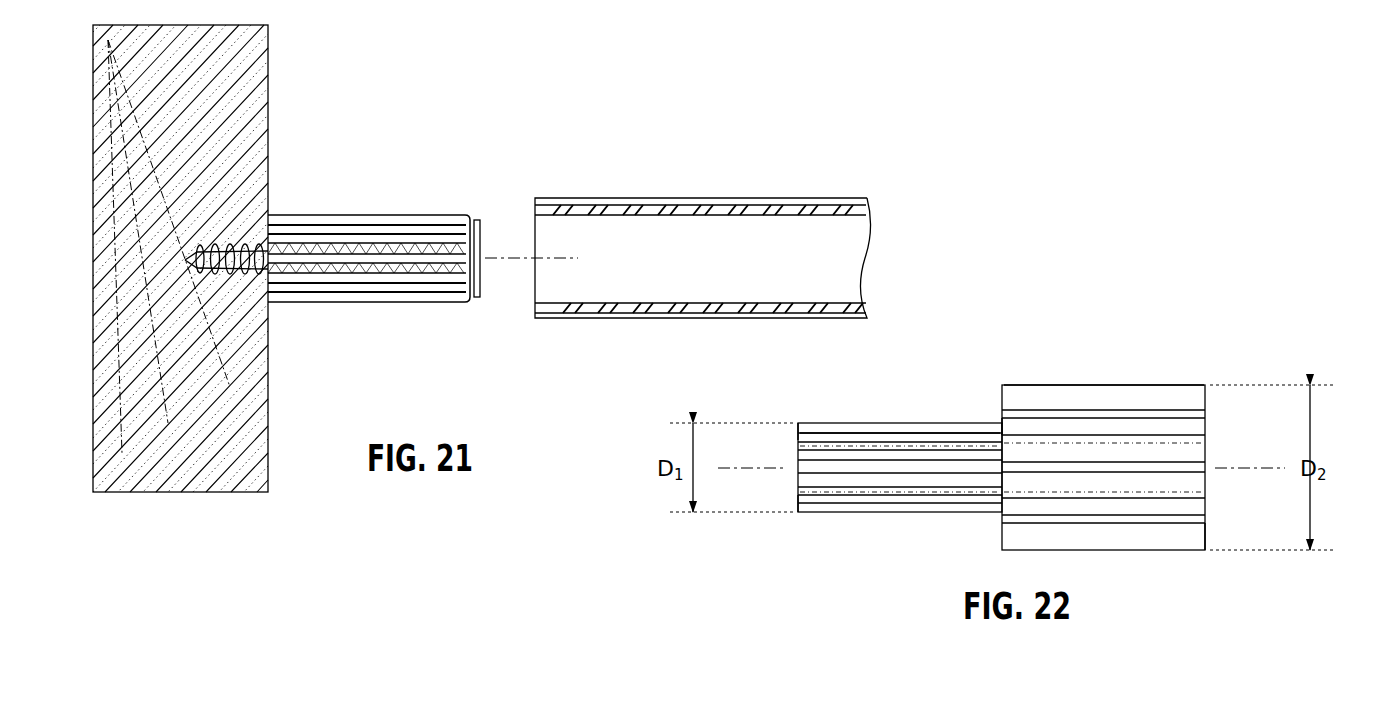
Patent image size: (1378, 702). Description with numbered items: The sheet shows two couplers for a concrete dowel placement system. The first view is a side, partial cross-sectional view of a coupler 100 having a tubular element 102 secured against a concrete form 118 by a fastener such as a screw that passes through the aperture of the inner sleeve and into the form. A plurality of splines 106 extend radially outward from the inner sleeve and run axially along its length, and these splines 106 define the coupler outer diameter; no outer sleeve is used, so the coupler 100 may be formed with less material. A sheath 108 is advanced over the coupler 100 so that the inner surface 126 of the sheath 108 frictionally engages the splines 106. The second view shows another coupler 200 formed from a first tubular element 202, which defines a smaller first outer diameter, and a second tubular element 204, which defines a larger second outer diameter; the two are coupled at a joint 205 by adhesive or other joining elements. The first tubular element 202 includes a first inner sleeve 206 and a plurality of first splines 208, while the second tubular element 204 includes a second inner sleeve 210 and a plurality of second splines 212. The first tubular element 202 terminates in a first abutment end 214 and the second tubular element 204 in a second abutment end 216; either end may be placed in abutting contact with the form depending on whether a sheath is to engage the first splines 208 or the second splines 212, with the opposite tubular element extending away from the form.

In FIG. 21, the coupler 100 is at (374, 235).
In FIG. 21, the tubular element 102 is at (433, 212).
In FIG. 21, the splines 106 is at (360, 303).
In FIG. 21, the sheath 108 is at (703, 223).
In FIG. 21, the concrete form 118 is at (256, 68).
In FIG. 21, the inner surface of the sheath 126 is at (700, 213).
In FIG. 22, the coupler 200 is at (1015, 448).
In FIG. 22, the first tubular element 202 is at (874, 477).
In FIG. 22, the second tubular element 204 is at (1115, 463).
In FIG. 22, the joint 205 is at (1002, 430).
In FIG. 22, the first inner sleeve 206 is at (795, 493).
In FIG. 22, the first splines 208 is at (855, 432).
In FIG. 22, the second inner sleeve 210 is at (1040, 393).
In FIG. 22, the second splines 212 is at (1175, 390).
In FIG. 22, the first abutment end 214 is at (798, 432).
In FIG. 22, the second abutment end 216 is at (1205, 535).